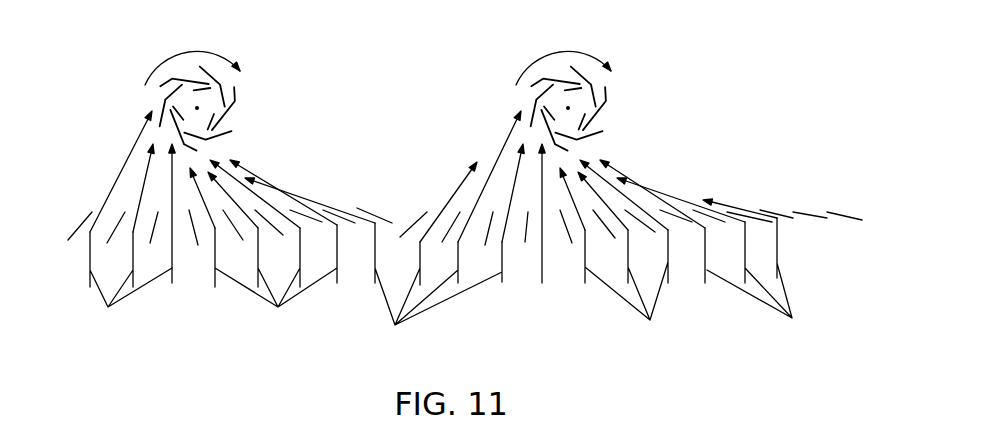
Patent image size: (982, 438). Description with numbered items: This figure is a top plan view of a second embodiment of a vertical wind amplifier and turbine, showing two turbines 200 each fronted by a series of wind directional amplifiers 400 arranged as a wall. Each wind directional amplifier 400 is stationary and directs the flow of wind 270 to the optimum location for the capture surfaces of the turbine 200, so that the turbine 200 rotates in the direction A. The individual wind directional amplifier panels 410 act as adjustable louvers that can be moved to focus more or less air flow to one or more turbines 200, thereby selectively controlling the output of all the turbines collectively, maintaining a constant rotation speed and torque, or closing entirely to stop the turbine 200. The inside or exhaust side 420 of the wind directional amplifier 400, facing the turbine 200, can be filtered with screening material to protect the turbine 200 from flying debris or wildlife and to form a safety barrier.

The turbine 200 is at (261, 101).
The flow of wind 270 is at (542, 265).
The wind directional amplifier 400 is at (568, 288).
The wind directional amplifier panels 410 is at (80, 222).
The exhaust side 420 is at (410, 183).
The rotation direction A is at (158, 61).